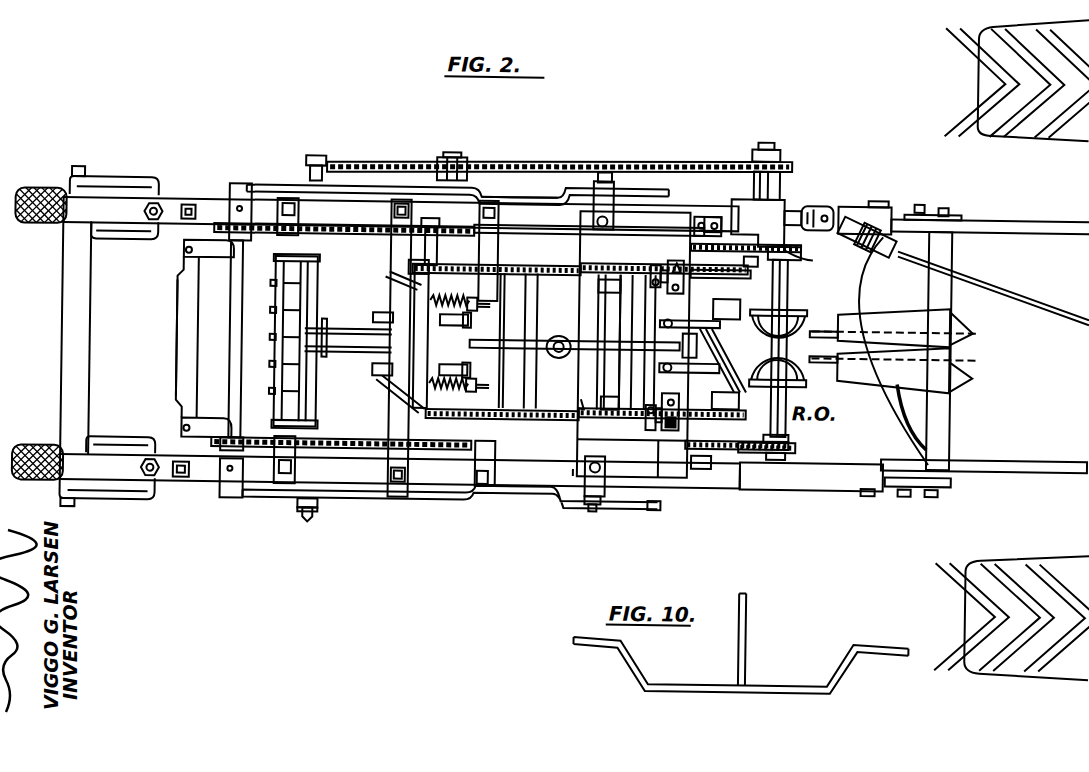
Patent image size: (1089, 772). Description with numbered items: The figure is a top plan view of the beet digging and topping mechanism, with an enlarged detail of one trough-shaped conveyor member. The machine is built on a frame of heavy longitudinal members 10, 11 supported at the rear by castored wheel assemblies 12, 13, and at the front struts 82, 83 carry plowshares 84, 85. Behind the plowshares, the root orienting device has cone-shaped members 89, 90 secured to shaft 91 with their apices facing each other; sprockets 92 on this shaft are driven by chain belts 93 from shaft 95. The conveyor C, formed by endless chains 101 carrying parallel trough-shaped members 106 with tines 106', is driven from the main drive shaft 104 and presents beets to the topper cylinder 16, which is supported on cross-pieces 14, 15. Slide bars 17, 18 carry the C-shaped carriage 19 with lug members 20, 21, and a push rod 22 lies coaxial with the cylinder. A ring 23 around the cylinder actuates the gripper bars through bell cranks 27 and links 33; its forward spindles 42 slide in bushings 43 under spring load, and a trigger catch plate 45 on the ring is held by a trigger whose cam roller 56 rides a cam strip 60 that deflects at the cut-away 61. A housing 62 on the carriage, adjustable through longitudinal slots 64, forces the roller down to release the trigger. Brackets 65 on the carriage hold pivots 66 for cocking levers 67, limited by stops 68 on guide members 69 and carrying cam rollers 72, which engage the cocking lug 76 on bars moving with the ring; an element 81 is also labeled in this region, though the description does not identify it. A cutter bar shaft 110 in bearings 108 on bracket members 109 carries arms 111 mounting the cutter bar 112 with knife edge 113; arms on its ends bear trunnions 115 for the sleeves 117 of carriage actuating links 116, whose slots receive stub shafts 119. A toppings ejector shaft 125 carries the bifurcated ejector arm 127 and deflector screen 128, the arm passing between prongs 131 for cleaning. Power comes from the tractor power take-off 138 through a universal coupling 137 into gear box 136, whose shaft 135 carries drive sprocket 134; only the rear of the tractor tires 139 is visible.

In FIG. 2, the longitudinal frame member 10 is at (868, 208).
In FIG. 2, the longitudinal frame member 11 is at (823, 470).
In FIG. 2, the castored wheel assembly 12 is at (42, 228).
In FIG. 2, the castored wheel assembly 13 is at (42, 483).
In FIG. 2, the cross-piece 14 is at (400, 251).
In FIG. 2, the cross-piece 15 is at (482, 262).
In FIG. 2, the topper cylinder 16 is at (486, 316).
In FIG. 2, the slide bar 17 is at (543, 224).
In FIG. 2, the slide bar 18 is at (522, 487).
In FIG. 2, the carriage 19 is at (663, 467).
In FIG. 2, the lug member 20 is at (607, 200).
In FIG. 2, the lug member 21 is at (612, 500).
In FIG. 2, the push rod 22 is at (585, 341).
In FIG. 2, the ring 23 is at (375, 376).
In FIG. 2, the bell crank 27 is at (400, 414).
In FIG. 2, the link 33 is at (388, 283).
In FIG. 2, the spindle 42 is at (497, 293).
In FIG. 2, the bushing 43 is at (480, 297).
In FIG. 2, the trigger catch plate 45 is at (418, 270).
In FIG. 2, the cam roller 56 is at (559, 334).
In FIG. 2, the cam strip 60 is at (620, 340).
In FIG. 2, the cut-away 61 is at (640, 328).
In FIG. 2, the housing 62 is at (690, 374).
In FIG. 2, the longitudinal slot 64 is at (718, 315).
In FIG. 2, the bracket 65 is at (668, 264).
In FIG. 2, the pivot 66 is at (675, 262).
In FIG. 2, the cocking lever 67 is at (660, 272).
In FIG. 2, the stop 68 is at (632, 457).
In FIG. 2, the guide member 69 is at (652, 263).
In FIG. 2, the cam roller 72 is at (600, 278).
In FIG. 2, the cocking lug 76 is at (492, 225).
In FIG. 2, the bolt 81 is at (452, 313).
In FIG. 2, the strut 82 is at (893, 266).
In FIG. 2, the strut 83 is at (894, 436).
In FIG. 2, the plowshare 84 is at (973, 333).
In FIG. 2, the plowshare 85 is at (973, 378).
In FIG. 2, the cone-shaped member 89 is at (790, 307).
In FIG. 2, the cone-shaped member 90 is at (810, 387).
In FIG. 2, the shaft 91 is at (795, 266).
In FIG. 2, the sprocket 92 is at (792, 438).
In FIG. 2, the chain belt 93 is at (733, 490).
In FIG. 2, the shaft 95 is at (758, 262).
In FIG. 2, the endless chain 101 is at (582, 400).
In FIG. 2, the main drive shaft 104 is at (453, 157).
In FIG. 10, the trough-shaped member 106 is at (741, 665).
In FIG. 2, the tine 106' is at (808, 348).
In FIG. 10, the tine 106' is at (774, 639).
In FIG. 2, the bearing 108 is at (248, 183).
In FIG. 2, the bracket member 109 is at (207, 202).
In FIG. 2, the cutter bar shaft 110 is at (238, 290).
In FIG. 2, the arm 111 is at (217, 257).
In FIG. 2, the cutter bar 112 is at (182, 328).
In FIG. 2, the knife edge 113 is at (177, 363).
In FIG. 2, the trunnion 115 is at (314, 157).
In FIG. 2, the carriage actuating link 116 is at (363, 187).
In FIG. 2, the sleeve 117 is at (327, 170).
In FIG. 2, the stub shaft 119 is at (607, 170).
In FIG. 2, the toppings ejector shaft 125 is at (362, 312).
In FIG. 2, the topping ejector arm 127 is at (298, 338).
In FIG. 2, the deflector screen 128 is at (290, 353).
In FIG. 2, the prong 131 is at (342, 352).
In FIG. 2, the drive sprocket 134 is at (780, 165).
In FIG. 2, the shaft 135 is at (762, 150).
In FIG. 2, the gear housing box 136 is at (790, 202).
In FIG. 2, the universal coupling 137 is at (845, 207).
In FIG. 2, the power take-off 138 is at (1013, 290).
In FIG. 2, the tire 139 is at (977, 95).
In FIG. 2, the conveyor C is at (575, 470).